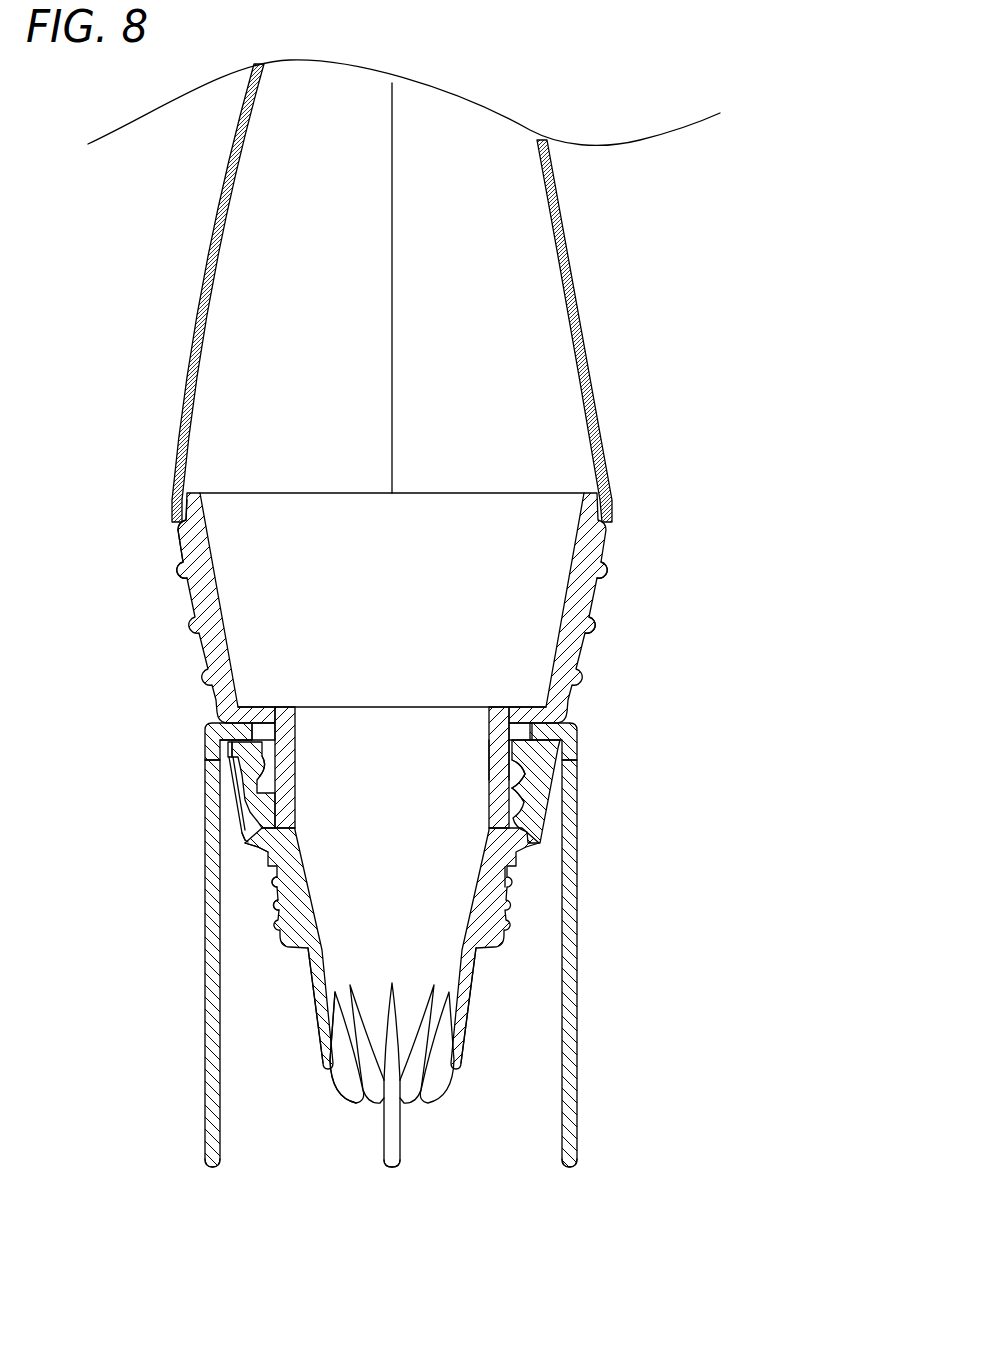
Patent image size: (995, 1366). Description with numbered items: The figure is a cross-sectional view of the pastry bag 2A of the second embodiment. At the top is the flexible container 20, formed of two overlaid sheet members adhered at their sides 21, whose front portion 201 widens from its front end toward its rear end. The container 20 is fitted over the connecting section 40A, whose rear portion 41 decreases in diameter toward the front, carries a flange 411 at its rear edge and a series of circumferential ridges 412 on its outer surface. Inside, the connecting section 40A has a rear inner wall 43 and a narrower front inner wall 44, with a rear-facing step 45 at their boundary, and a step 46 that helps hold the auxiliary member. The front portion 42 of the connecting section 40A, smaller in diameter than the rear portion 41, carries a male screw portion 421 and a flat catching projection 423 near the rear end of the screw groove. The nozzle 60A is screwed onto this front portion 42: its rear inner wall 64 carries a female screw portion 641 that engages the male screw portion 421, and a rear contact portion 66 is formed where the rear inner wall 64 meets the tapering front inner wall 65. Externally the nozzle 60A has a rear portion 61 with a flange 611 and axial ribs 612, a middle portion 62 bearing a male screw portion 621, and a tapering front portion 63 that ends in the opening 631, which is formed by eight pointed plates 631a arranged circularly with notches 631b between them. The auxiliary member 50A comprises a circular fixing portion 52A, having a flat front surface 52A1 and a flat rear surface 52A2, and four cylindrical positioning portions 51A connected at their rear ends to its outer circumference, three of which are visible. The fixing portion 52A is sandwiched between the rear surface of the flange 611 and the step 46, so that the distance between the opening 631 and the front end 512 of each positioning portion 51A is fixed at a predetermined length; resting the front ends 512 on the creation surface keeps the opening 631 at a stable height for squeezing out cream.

The pastry bag 2A is at (721, 237).
The container 20 is at (585, 191).
The sides 21 is at (397, 305).
The front portion 201 is at (517, 338).
The connecting section 40A is at (452, 483).
The flange 411 is at (188, 497).
The rear portion 41 is at (176, 535).
The ridges 412 is at (180, 573).
The rear inner wall 43 is at (567, 592).
The step 46 is at (250, 713).
The step 45 is at (495, 707).
The front inner wall 44 is at (488, 760).
The fixing portion 52A is at (220, 723).
The front surface 52A1 is at (207, 725).
The rear surface 52A2 is at (252, 720).
The flange 611 is at (223, 740).
The rear portion 61 is at (242, 795).
The ribs 612 is at (242, 820).
The front portion 42 is at (253, 757).
The rear contact portion 66 is at (252, 833).
The nozzle 60A is at (549, 824).
The catching projection 423 is at (513, 743).
The rear inner wall 64 is at (528, 762).
The male screw portion 421 is at (523, 792).
The female screw portion 641 is at (525, 797).
The middle portion 62 is at (283, 938).
The male screw portion 621 is at (275, 903).
The front inner wall 65 is at (473, 875).
The front portion 63 is at (320, 1023).
The opening 631 is at (419, 1134).
The pointed plates 631a is at (347, 1080).
The notches 631b is at (361, 1112).
The auxiliary member 50A is at (419, 991).
The positioning portions 51A is at (203, 1132).
The front end 512 is at (213, 1170).